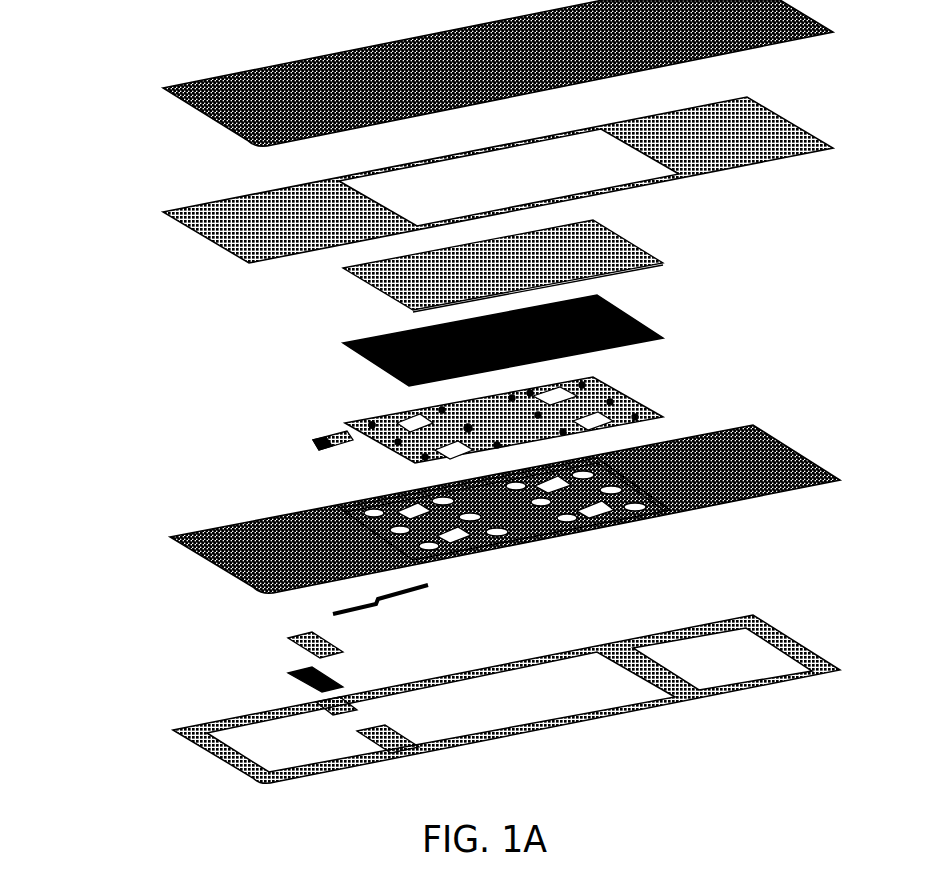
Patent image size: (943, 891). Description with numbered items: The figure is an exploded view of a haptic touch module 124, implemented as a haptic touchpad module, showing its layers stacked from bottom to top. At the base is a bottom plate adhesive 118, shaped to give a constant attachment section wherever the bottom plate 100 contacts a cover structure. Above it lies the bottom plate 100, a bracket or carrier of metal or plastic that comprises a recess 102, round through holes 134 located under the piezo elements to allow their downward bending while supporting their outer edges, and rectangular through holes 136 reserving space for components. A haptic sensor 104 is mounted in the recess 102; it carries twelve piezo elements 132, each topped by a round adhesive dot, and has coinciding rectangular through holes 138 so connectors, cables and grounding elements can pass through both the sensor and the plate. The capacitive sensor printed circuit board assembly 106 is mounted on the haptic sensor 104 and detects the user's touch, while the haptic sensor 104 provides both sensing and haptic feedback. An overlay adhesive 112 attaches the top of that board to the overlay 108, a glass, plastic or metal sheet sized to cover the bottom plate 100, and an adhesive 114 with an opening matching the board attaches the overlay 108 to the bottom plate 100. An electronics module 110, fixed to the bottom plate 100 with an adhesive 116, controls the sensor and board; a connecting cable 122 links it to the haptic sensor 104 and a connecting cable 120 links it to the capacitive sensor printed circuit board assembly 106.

The bottom plate 100 is at (505, 509).
The recess 102 is at (529, 518).
The haptic sensor 104 is at (499, 418).
The capacitive sensor printed circuit board assembly 106 is at (660, 341).
The overlay 108 is at (792, 38).
The electronics module 110 is at (292, 674).
The overlay adhesive 112 is at (658, 266).
The adhesive 114 is at (792, 158).
The adhesive 116 is at (345, 654).
The bottom plate adhesive 118 is at (717, 693).
The connecting cable 120 is at (428, 588).
The connecting cable 122 is at (340, 436).
The haptic touch module 124 is at (163, 363).
The piezo element 132 is at (368, 423).
The through hole 134 is at (662, 512).
The through hole 136 is at (612, 520).
The through hole 138 is at (408, 422).